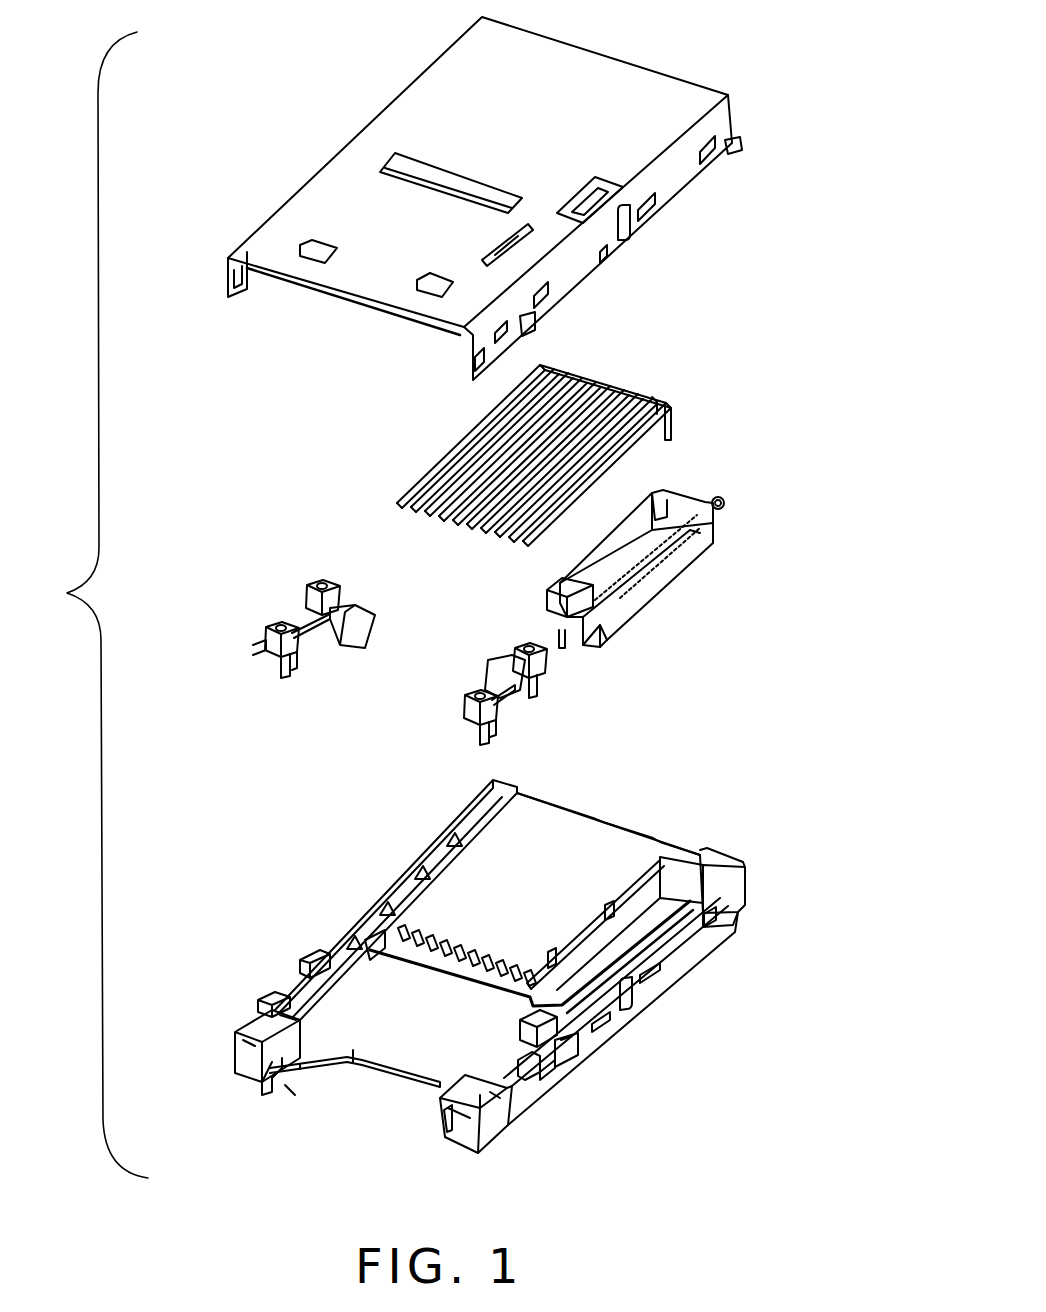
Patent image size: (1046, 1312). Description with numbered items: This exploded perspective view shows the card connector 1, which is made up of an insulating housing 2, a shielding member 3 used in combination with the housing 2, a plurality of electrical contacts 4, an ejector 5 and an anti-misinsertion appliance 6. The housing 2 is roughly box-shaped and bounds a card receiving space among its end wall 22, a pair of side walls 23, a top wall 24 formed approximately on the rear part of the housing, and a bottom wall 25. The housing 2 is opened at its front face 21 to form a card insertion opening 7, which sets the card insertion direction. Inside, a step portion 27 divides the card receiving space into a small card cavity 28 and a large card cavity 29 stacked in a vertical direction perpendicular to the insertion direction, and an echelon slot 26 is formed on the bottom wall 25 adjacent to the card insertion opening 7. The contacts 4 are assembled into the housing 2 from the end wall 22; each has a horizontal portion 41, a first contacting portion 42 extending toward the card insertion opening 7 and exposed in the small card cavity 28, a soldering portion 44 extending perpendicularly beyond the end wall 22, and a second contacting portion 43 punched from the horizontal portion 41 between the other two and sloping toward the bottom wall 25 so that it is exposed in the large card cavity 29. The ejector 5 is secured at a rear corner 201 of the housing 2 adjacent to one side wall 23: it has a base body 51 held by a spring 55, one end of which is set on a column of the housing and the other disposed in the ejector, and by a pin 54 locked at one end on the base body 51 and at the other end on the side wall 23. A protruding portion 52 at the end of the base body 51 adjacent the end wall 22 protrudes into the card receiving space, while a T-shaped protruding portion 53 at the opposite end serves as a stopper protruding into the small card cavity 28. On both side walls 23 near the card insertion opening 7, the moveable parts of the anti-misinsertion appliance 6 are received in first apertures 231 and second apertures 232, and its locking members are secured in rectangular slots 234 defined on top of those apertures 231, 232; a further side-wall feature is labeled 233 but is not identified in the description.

The card connector 1 is at (89, 605).
The insulating housing 2 is at (483, 974).
The shielding member 3 is at (690, 54).
The electrical contacts 4 is at (536, 423).
The ejector 5 is at (634, 549).
The anti-misinsertion appliance 6 is at (260, 594).
The card insertion opening 7 is at (415, 1058).
The front face 21 is at (242, 1045).
The end wall 22 is at (729, 855).
The side walls 23 is at (678, 945).
The top wall 24 is at (548, 830).
The bottom wall 25 is at (372, 1048).
The echelon slot 26 is at (327, 1072).
The step portion 27 is at (443, 1137).
The small card cavity 28 is at (248, 1083).
The large card cavity 29 is at (273, 1092).
The rear corner 201 is at (662, 912).
The first apertures 231 is at (297, 1100).
The second apertures 232 is at (365, 945).
The protrusion 233 is at (523, 1092).
The rectangular slots 234 is at (315, 972).
The horizontal portion 41 is at (580, 478).
The first contacting portion 42 is at (400, 503).
The second contacting portion 43 is at (655, 392).
The soldering portion 44 is at (660, 410).
The base body 51 is at (653, 587).
The protruding portion 52 is at (660, 495).
The T-shaped protruding portion 53 is at (551, 598).
The pin 54 is at (558, 645).
The spring 55 is at (724, 509).